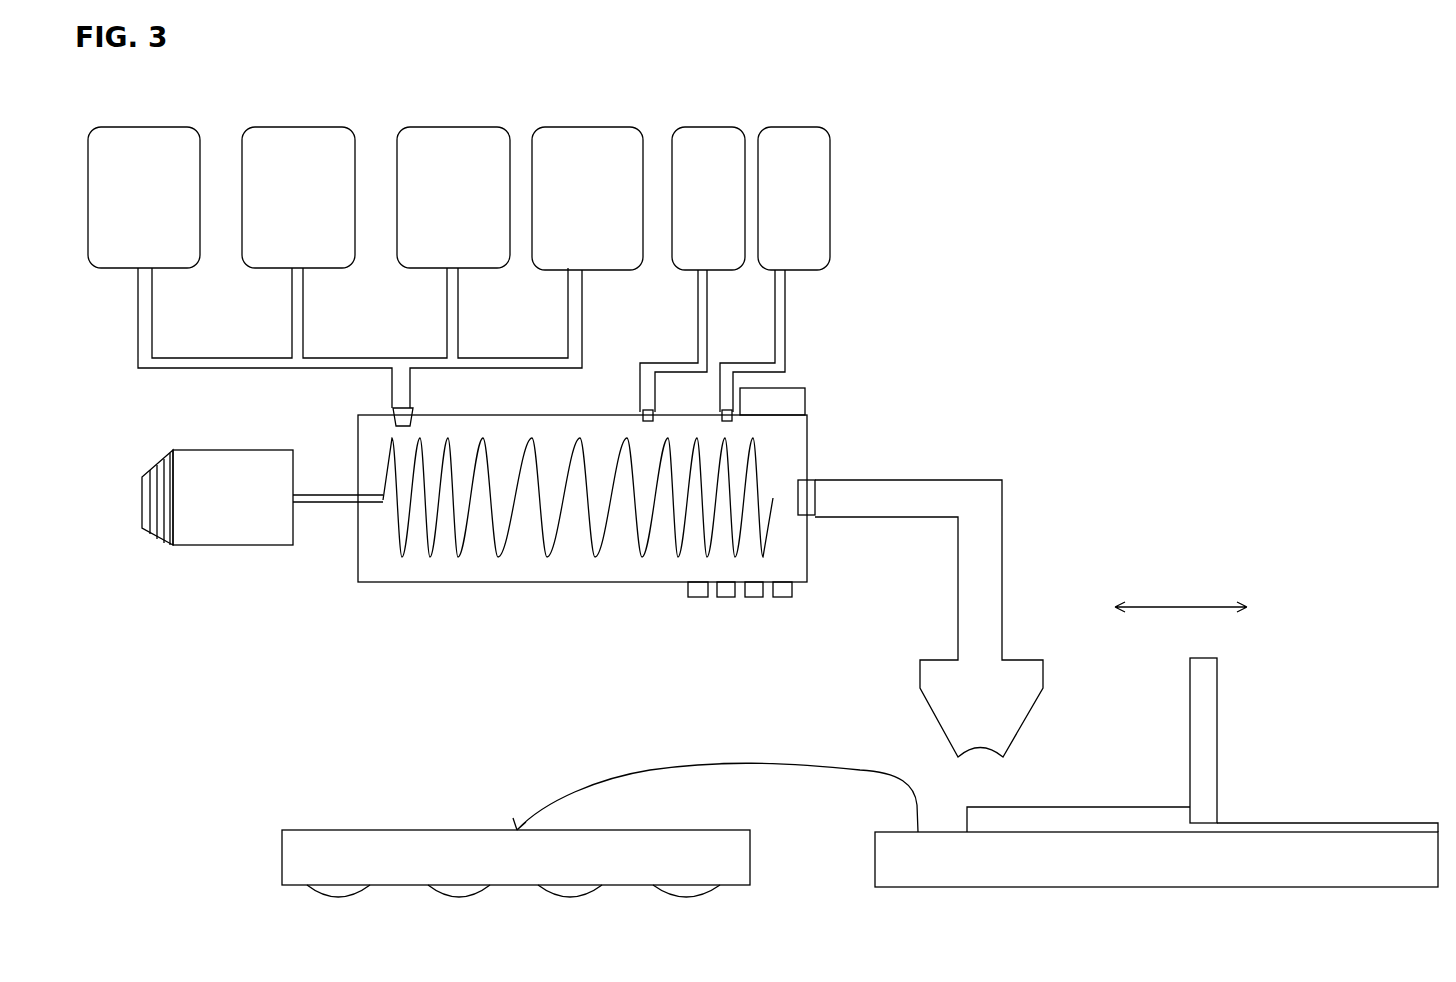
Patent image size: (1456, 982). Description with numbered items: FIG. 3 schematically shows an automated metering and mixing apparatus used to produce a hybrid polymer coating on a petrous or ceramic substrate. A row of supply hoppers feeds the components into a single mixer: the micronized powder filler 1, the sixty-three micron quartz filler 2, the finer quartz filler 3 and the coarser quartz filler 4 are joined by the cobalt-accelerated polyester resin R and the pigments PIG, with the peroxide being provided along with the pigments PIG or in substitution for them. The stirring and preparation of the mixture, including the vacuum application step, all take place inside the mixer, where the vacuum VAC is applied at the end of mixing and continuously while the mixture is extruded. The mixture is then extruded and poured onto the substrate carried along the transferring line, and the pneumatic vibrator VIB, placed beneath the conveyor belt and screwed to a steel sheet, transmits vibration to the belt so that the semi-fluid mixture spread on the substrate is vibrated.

The filler 1 is at (240, 267).
The filler 2 is at (344, 242).
The filler 3 is at (482, 242).
The filler 4 is at (526, 267).
The polyester resin R is at (692, 274).
The pigments PIG is at (775, 274).
The vacuum VAC is at (772, 401).
The pneumatic vibrator VIB is at (516, 863).